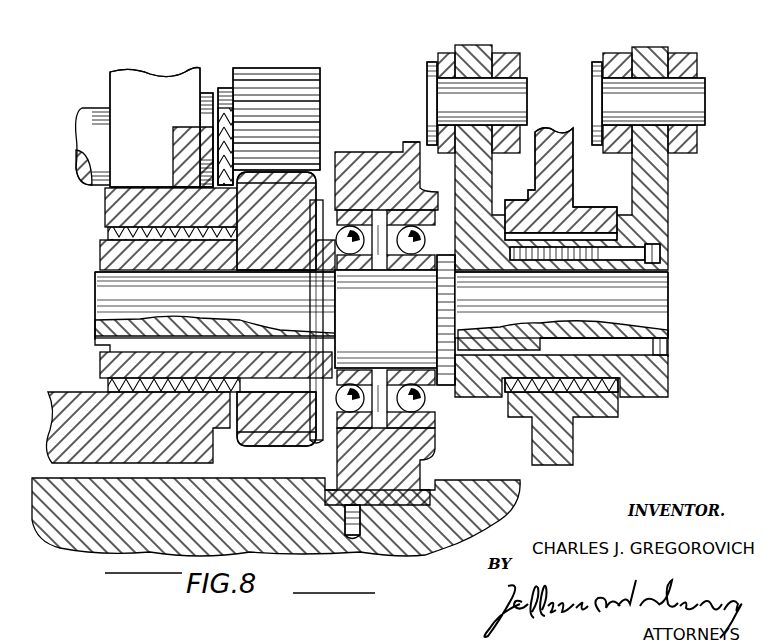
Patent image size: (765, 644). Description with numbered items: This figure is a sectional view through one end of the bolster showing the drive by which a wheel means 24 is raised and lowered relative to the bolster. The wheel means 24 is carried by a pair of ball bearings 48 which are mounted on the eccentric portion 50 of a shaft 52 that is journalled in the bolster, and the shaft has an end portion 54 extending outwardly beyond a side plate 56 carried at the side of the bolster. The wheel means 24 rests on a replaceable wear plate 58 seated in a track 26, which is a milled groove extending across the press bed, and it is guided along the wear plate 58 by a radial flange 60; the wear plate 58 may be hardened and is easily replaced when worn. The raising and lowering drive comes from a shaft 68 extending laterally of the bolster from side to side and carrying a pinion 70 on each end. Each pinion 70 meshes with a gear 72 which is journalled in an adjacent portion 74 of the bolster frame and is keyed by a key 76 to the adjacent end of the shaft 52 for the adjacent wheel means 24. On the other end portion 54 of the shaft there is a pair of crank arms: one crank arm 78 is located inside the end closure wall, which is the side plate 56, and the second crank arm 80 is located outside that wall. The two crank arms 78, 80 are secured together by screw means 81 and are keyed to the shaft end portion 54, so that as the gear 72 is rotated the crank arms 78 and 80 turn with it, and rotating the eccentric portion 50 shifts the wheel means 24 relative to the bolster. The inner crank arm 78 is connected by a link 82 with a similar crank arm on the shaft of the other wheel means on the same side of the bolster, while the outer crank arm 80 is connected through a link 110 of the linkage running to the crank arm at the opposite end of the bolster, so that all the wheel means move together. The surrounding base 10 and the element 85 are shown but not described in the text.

The base 10 is at (68, 545).
The shaft 68 is at (76, 125).
The pinion 70 is at (268, 68).
The gear 72 is at (306, 180).
The portion of the bolster frame 74 is at (112, 212).
The key 76 is at (113, 354).
The shaft 52 is at (100, 296).
The wheel means 24 is at (368, 152).
The radial flange 60 is at (412, 142).
The ball bearings 48 is at (330, 430).
The eccentric portion 50 is at (392, 318).
The track 26 is at (420, 492).
The wear plate 58 is at (388, 505).
The link 82 is at (512, 56).
The link 110 is at (678, 54).
The side plate 56 is at (555, 130).
The screw means 81 is at (662, 254).
The end portion of the shaft 54 is at (670, 300).
The snap ring 85 is at (662, 352).
The crank arm 78 is at (484, 397).
The crank arm 80 is at (650, 397).